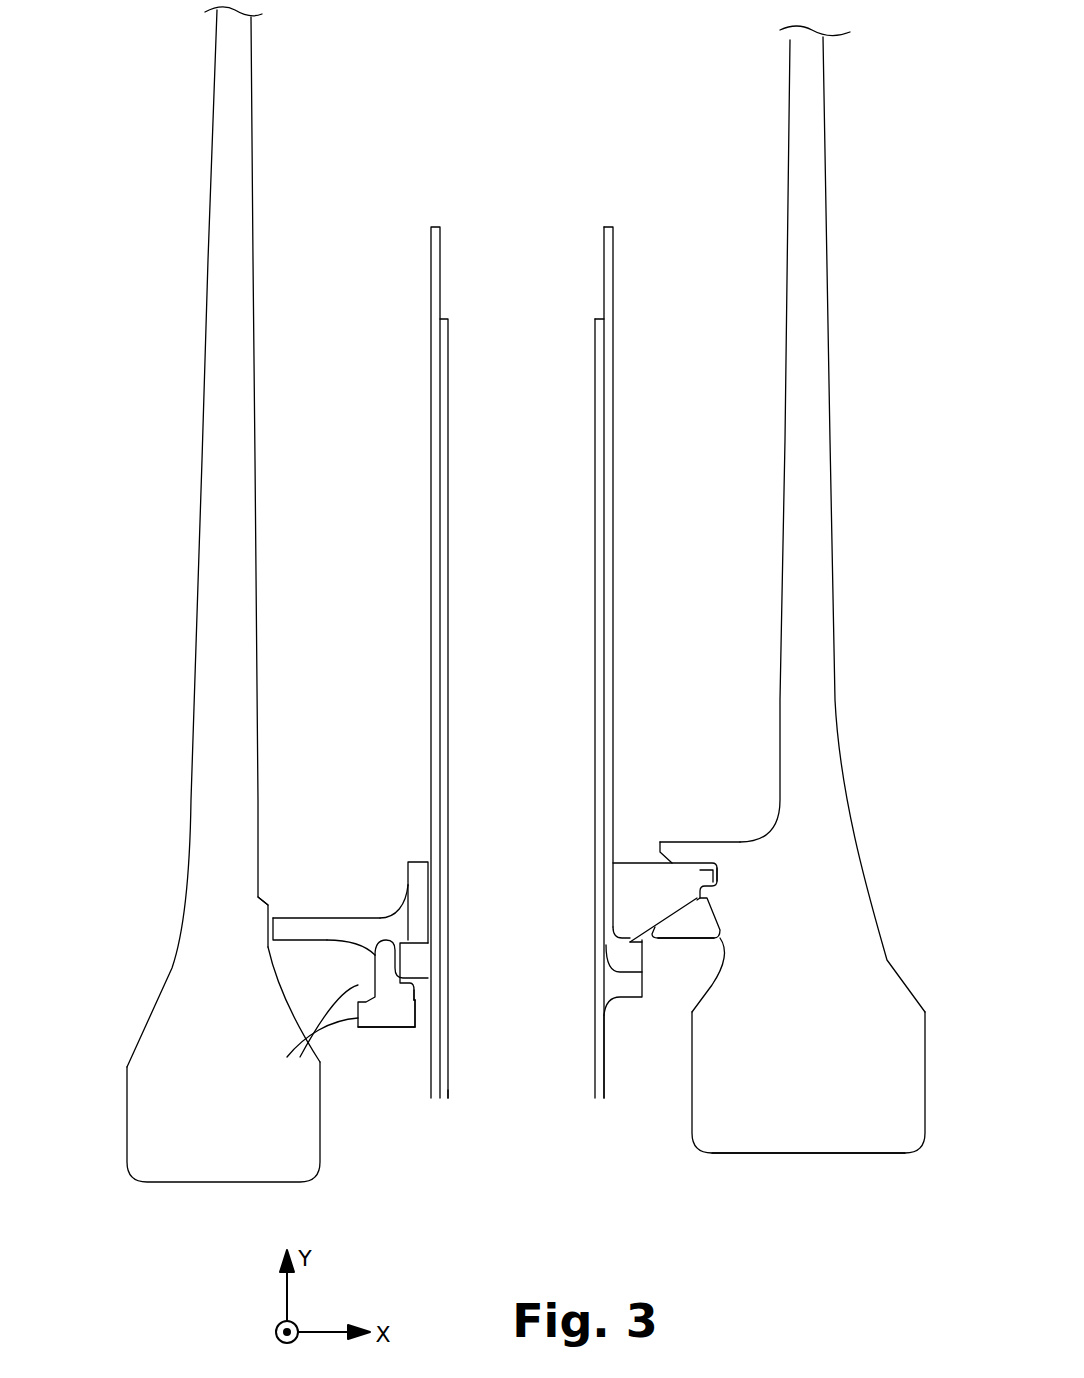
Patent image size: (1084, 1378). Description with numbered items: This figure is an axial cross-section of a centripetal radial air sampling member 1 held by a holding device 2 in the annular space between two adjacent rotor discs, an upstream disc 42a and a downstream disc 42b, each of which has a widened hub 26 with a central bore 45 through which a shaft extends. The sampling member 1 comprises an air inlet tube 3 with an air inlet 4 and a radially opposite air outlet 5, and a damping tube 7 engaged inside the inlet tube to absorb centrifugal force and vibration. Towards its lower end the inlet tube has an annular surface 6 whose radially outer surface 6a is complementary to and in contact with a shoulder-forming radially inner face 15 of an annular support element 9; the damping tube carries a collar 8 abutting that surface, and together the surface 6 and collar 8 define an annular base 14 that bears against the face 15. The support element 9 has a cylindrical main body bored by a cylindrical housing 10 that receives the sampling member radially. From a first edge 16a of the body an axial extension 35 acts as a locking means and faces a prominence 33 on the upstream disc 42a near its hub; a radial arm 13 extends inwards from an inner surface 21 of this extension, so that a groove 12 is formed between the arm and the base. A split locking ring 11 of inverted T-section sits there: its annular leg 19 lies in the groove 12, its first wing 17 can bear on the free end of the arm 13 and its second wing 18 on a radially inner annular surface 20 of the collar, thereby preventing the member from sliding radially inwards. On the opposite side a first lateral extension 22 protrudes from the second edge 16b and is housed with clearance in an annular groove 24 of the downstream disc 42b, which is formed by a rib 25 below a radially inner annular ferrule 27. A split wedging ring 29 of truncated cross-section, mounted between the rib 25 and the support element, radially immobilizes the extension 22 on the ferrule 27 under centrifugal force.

The air sampling member 1 is at (645, 210).
The holding device 2 is at (641, 798).
The air inlet tube 3 is at (431, 265).
The air inlet 4 is at (472, 233).
The air outlet 5 is at (548, 1097).
The annular surface 6 is at (622, 955).
The radially outer surface 6a is at (403, 928).
The damping tube 7 is at (448, 368).
The collar 8 is at (627, 983).
The support element 9 is at (420, 862).
The cylindrical housing 10 is at (432, 938).
The locking ring 11 is at (385, 1013).
The groove 12 is at (367, 977).
The annular arm 13 is at (367, 1013).
The annular base 14 is at (630, 1015).
The radially inner face 15 is at (640, 955).
The first edge 16a is at (407, 873).
The second annular edge 16b is at (667, 910).
The first wing 17 is at (358, 1013).
The second wing 18 is at (407, 1013).
The annular leg 19 is at (400, 978).
The radially inner annular surface 20 is at (424, 1014).
The inner surface 21 is at (290, 950).
The first lateral extension 22 is at (697, 873).
The annular groove 24 is at (730, 873).
The rib 25 is at (720, 910).
The hub 26 is at (163, 1107).
The radially inner annular ferrule 27 is at (673, 847).
The wedging ring 29 is at (687, 927).
The prominence 33 is at (267, 915).
The axial extension 35 is at (305, 918).
The upstream disc 42a is at (200, 555).
The downstream disc 42b is at (826, 412).
The central bore 45 is at (778, 1153).